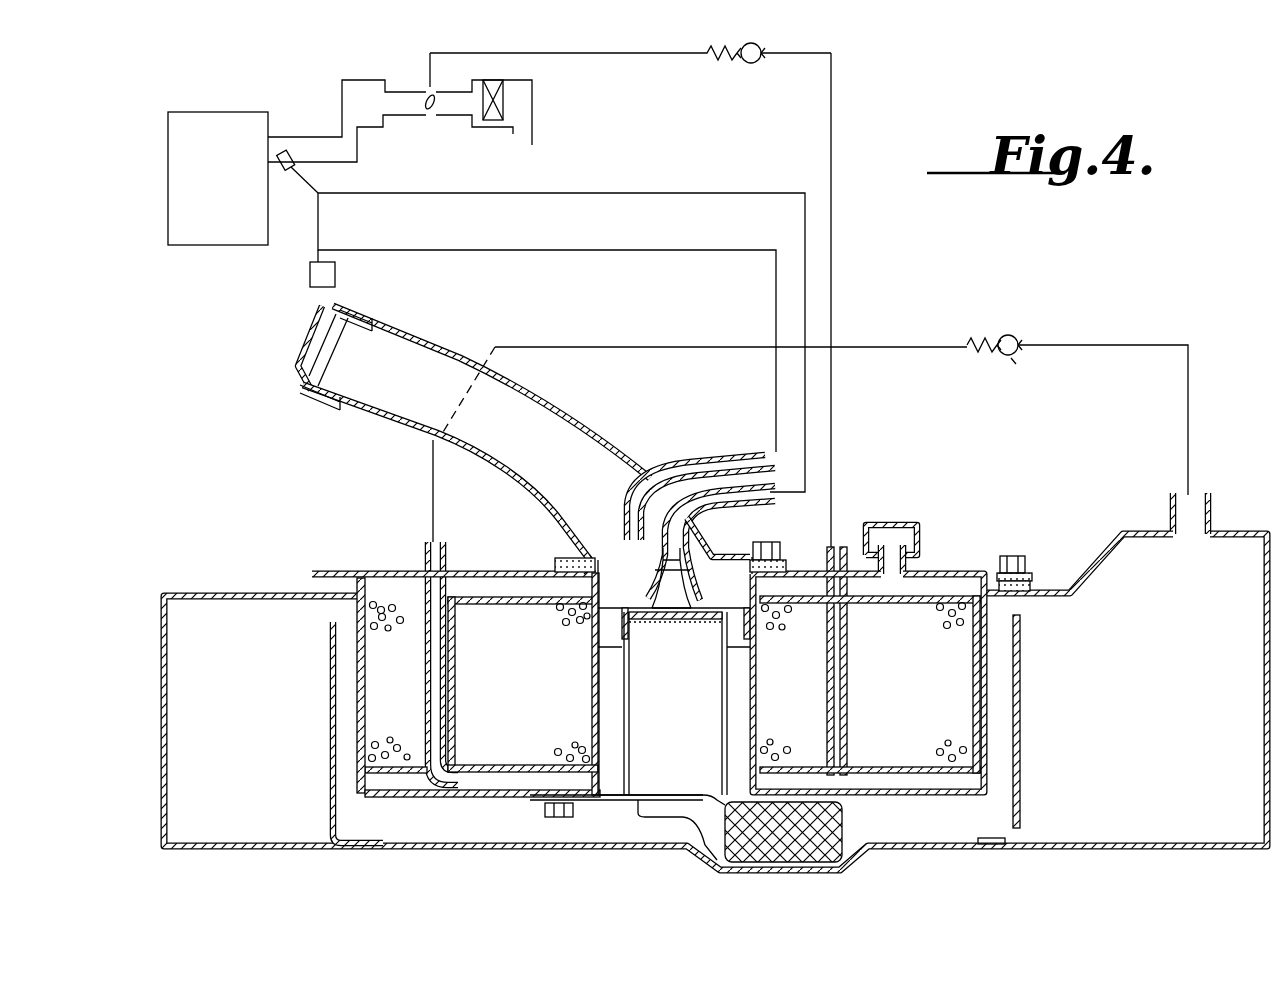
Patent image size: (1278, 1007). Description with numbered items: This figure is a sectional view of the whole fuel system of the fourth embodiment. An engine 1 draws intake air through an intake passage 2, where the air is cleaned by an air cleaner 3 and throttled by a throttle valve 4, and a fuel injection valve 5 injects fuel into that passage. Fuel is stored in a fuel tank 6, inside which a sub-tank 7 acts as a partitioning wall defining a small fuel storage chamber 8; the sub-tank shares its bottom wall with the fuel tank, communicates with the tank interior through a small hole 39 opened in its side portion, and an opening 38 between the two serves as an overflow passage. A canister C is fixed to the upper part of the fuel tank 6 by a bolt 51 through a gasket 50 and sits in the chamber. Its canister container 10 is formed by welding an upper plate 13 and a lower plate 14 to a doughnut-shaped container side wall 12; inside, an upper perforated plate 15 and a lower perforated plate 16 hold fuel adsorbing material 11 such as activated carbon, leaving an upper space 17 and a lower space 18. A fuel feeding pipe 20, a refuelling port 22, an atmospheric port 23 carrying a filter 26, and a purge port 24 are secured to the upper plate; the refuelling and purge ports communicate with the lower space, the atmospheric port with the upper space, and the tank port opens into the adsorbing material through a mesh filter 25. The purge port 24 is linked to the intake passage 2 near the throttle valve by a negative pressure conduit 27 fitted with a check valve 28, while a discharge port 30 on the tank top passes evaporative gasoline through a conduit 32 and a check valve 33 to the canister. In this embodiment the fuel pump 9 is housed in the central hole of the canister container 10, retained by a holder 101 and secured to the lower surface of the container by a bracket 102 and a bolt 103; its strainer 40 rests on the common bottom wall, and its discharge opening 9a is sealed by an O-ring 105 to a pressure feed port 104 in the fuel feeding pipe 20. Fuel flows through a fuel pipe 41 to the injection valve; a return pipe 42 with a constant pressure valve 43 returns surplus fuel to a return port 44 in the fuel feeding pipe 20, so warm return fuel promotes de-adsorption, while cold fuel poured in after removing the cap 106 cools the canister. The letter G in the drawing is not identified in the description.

The engine 1 is at (206, 113).
The intake passage 2 is at (398, 78).
The air cleaner 3 is at (493, 120).
The throttle valve 4 is at (430, 110).
The fuel injection valve 5 is at (290, 150).
The fuel tank 6 is at (1195, 858).
The sub-tank 7 is at (1022, 749).
The small fuel storage chamber 8 is at (430, 853).
The fuel pump 9 is at (612, 770).
The discharge opening 9a is at (685, 595).
The canister container 10 is at (357, 726).
The fuel adsorbing material 11 is at (372, 759).
The container side wall 12 is at (357, 656).
The upper plate 13 is at (490, 597).
The lower plate 14 is at (510, 798).
The upper perforated plate 15 is at (468, 600).
The lower perforated plate 16 is at (400, 774).
The upper space 17 is at (520, 575).
The lower space 18 is at (514, 800).
The fuel feeding pipe 20 is at (360, 410).
The refuelling port 22 is at (426, 556).
The atmospheric port 23 is at (920, 534).
The purge port 24 is at (847, 548).
The mesh filter 25 is at (868, 683).
The filter 26 is at (900, 524).
The negative pressure conduit 27 is at (831, 150).
The check valve 28 is at (750, 42).
The discharge port 30 is at (1208, 509).
The conduit 32 is at (1004, 334).
The check valve 33 is at (1100, 344).
The opening 38 is at (1010, 605).
The small hole 39 is at (1018, 850).
The strainer 40 is at (793, 868).
The fuel pipe 41 is at (666, 192).
The return pipe 42 is at (572, 251).
The constant pressure valve 43 is at (335, 280).
The return port 44 is at (700, 458).
The gasket 50 is at (1033, 580).
The bolt 51 is at (1022, 556).
The holder 101 is at (610, 630).
The bracket 102 is at (640, 822).
The bolt 103 is at (559, 818).
The pressure feed port 104 is at (773, 505).
The O-ring 105 is at (698, 524).
The cap 106 is at (292, 362).
The granules G is at (357, 691).